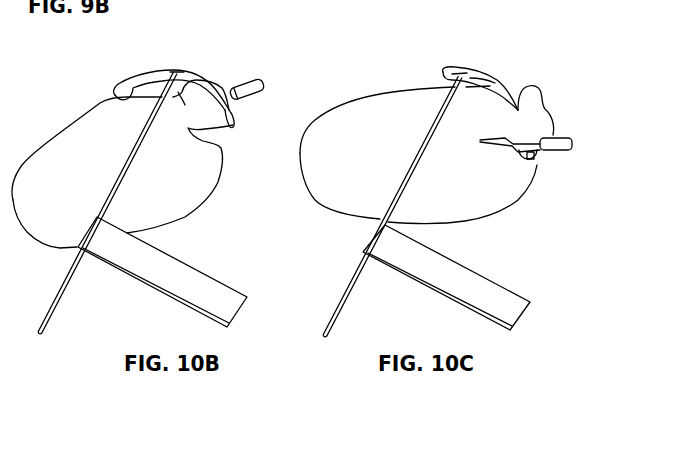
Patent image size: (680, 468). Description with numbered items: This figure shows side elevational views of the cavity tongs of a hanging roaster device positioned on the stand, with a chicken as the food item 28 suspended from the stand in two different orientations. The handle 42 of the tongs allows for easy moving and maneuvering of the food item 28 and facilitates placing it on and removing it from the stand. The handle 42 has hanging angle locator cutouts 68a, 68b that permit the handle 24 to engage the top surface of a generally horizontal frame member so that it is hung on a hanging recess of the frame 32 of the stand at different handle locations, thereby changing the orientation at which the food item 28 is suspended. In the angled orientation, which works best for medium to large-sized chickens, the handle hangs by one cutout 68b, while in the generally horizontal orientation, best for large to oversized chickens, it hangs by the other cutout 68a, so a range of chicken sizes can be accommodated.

In FIG. 10B, the handle 24 is at (266, 88).
In FIG. 10C, the handle 24 is at (573, 140).
In FIG. 10B, the food item 28 is at (175, 214).
In FIG. 10C, the food item 28 is at (378, 97).
In FIG. 10B, the frame 32 is at (54, 298).
In FIG. 10C, the frame 32 is at (340, 299).
In FIG. 10B, the handle 42 is at (140, 77).
In FIG. 10C, the handle 42 is at (497, 79).
In FIG. 10C, the hanging angle locator cutout 68a is at (457, 70).
In FIG. 10B, the hanging angle locator cutout 68b is at (182, 70).